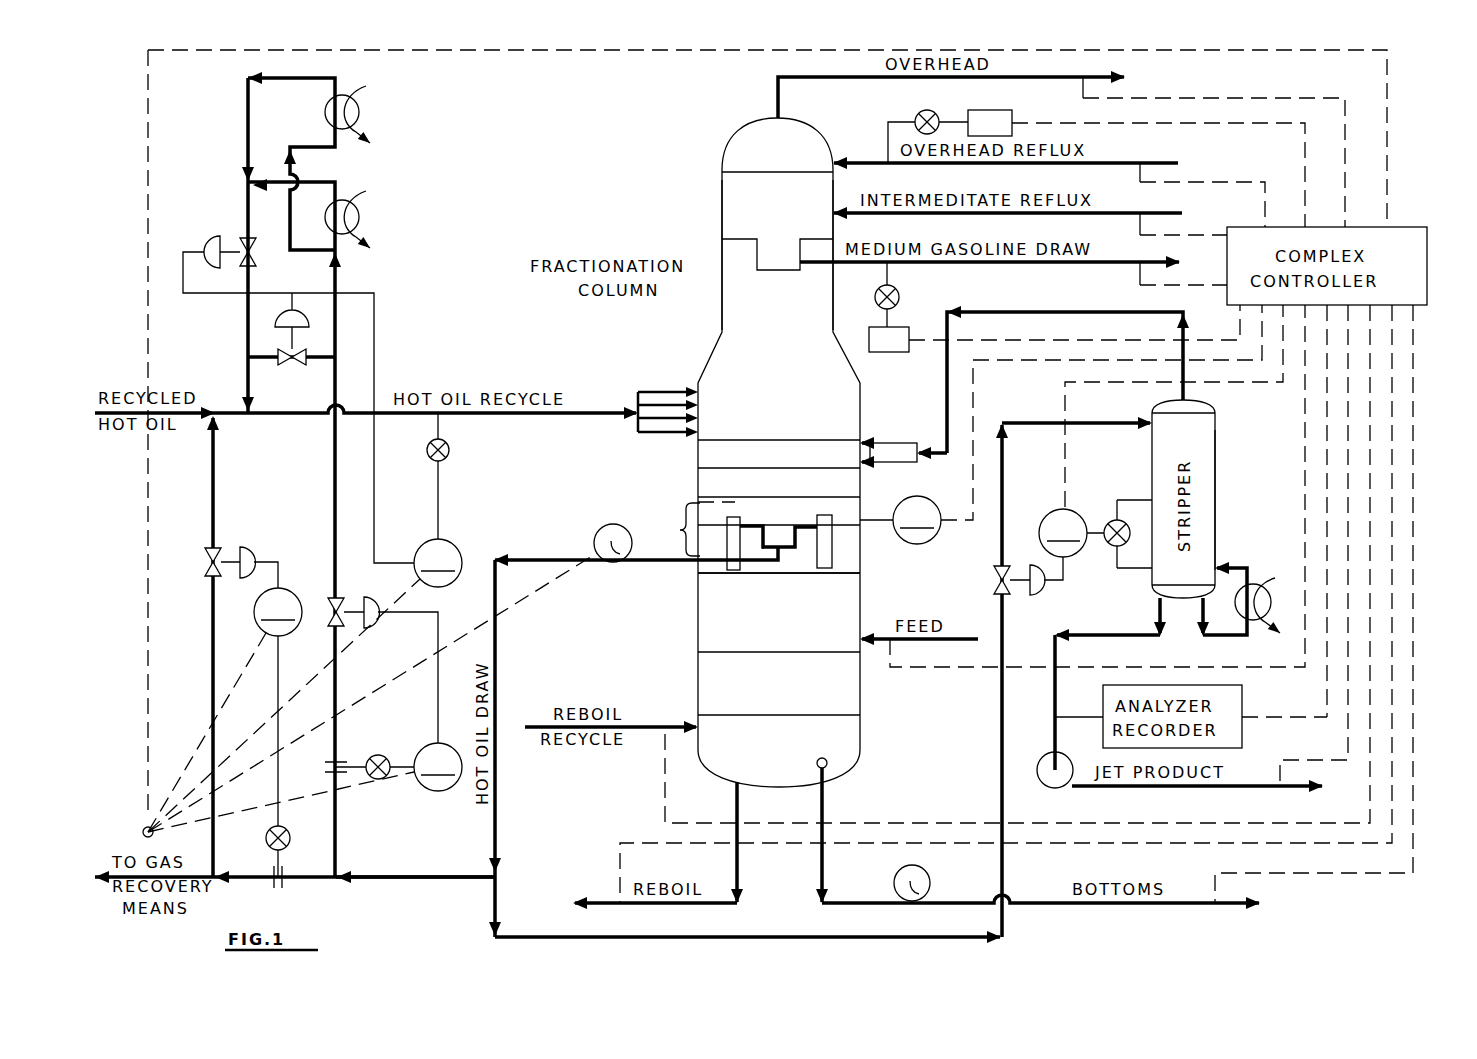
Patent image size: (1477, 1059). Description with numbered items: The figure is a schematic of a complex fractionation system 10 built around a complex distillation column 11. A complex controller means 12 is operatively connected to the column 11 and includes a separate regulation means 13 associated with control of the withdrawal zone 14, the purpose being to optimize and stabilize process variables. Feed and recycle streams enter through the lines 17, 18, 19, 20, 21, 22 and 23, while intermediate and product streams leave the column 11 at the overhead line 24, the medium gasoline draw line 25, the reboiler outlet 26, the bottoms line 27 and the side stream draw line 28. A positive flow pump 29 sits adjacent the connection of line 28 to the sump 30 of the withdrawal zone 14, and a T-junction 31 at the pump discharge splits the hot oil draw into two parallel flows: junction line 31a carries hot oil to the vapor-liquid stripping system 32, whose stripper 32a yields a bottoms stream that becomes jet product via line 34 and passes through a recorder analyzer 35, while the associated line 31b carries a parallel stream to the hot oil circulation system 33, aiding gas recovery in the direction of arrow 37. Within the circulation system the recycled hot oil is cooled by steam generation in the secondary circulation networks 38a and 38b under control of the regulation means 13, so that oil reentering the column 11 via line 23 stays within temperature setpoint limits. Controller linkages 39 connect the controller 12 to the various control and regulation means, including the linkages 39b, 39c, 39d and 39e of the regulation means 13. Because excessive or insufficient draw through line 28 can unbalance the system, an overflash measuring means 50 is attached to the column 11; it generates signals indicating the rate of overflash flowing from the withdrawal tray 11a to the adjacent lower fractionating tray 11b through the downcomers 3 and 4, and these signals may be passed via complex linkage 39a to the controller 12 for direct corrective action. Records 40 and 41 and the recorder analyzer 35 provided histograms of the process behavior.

The downcomer 3 is at (826, 569).
The downcomer 4 is at (735, 571).
The complex fractionation system 10 is at (697, 200).
The complex distillation column 11 is at (720, 330).
The withdrawal tray 11a is at (805, 527).
The lower fractionating tray 11b is at (765, 575).
The complex controller means 12 is at (1405, 226).
The regulation means 13 is at (487, 542).
The withdrawal zone 14 is at (679, 530).
The feed line 17 is at (961, 637).
The reboil recycle line 18 is at (651, 722).
The recycle line 19 is at (893, 442).
The recycle line 20 is at (894, 464).
The overhead reflux line 21 is at (1165, 163).
The intermediate reflux line 22 is at (1040, 214).
The hot oil recycle line 23 is at (527, 416).
The overhead line 24 is at (776, 95).
The medium gasoline draw line 25 is at (947, 268).
The reboiler outlet 26 is at (604, 902).
The bottoms line 27 is at (857, 902).
The side stream draw line 28 is at (657, 565).
The positive flow pump 29 is at (607, 525).
The sump 30 is at (791, 549).
The T-junction 31 is at (500, 877).
The junction line 31a is at (790, 935).
The associated line 31b is at (432, 873).
The vapor-liquid stripping system 32 is at (1135, 470).
The stripper 32a is at (1216, 487).
The hot oil circulation system 33 is at (212, 378).
The jet product line 34 is at (1098, 634).
The recorder analyzer 35 is at (1242, 701).
The arrow 37 is at (310, 903).
The secondary circulation network 38a is at (291, 537).
The secondary circulation network 38b is at (393, 208).
The controller linkages 39 is at (1330, 437).
The complex linkage 39a is at (975, 478).
The linkage 39b is at (262, 652).
The linkage 39c is at (325, 668).
The linkage 39d is at (395, 678).
The linkage 39e is at (350, 790).
The recorder 40 is at (1015, 112).
The recorder 41 is at (891, 354).
The overflash measuring means 50 is at (887, 547).